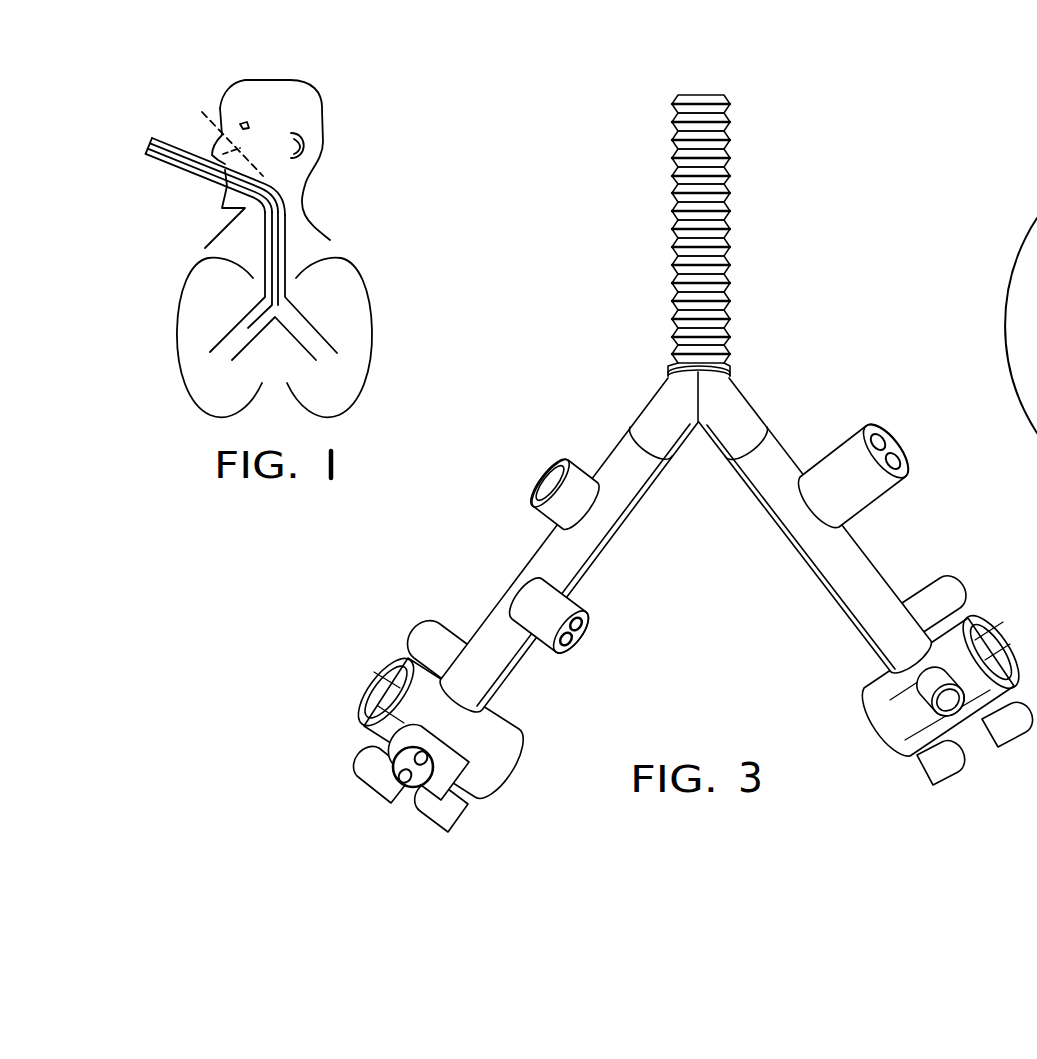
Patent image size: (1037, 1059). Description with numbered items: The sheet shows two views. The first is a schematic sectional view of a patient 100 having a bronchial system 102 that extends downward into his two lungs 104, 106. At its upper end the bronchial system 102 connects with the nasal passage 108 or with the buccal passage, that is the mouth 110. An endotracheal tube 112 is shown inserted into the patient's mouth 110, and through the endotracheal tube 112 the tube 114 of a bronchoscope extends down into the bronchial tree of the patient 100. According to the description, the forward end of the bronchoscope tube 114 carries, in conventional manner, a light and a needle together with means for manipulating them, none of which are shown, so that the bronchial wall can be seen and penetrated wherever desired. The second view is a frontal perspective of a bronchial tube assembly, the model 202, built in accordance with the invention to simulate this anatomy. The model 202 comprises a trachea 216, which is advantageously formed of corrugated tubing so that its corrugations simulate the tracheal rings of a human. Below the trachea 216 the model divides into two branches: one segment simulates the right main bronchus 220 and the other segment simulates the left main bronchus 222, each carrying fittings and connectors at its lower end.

In FIG. 1, the patient 100 is at (333, 153).
In FIG. 1, the bronchial system 102 is at (303, 352).
In FIG. 1, the lung 104 is at (176, 348).
In FIG. 1, the lung 106 is at (373, 337).
In FIG. 1, the nasal passage 108 is at (211, 135).
In FIG. 1, the buccal passage (mouth) 110 is at (245, 208).
In FIG. 1, the endotracheal tube 112 is at (285, 228).
In FIG. 1, the tube of a bronchoscope 114 is at (152, 160).
In FIG. 3, the model 202 is at (690, 459).
In FIG. 3, the trachea 216 is at (676, 212).
In FIG. 3, the right main bronchus 220 is at (552, 677).
In FIG. 3, the left main bronchus 222 is at (776, 556).